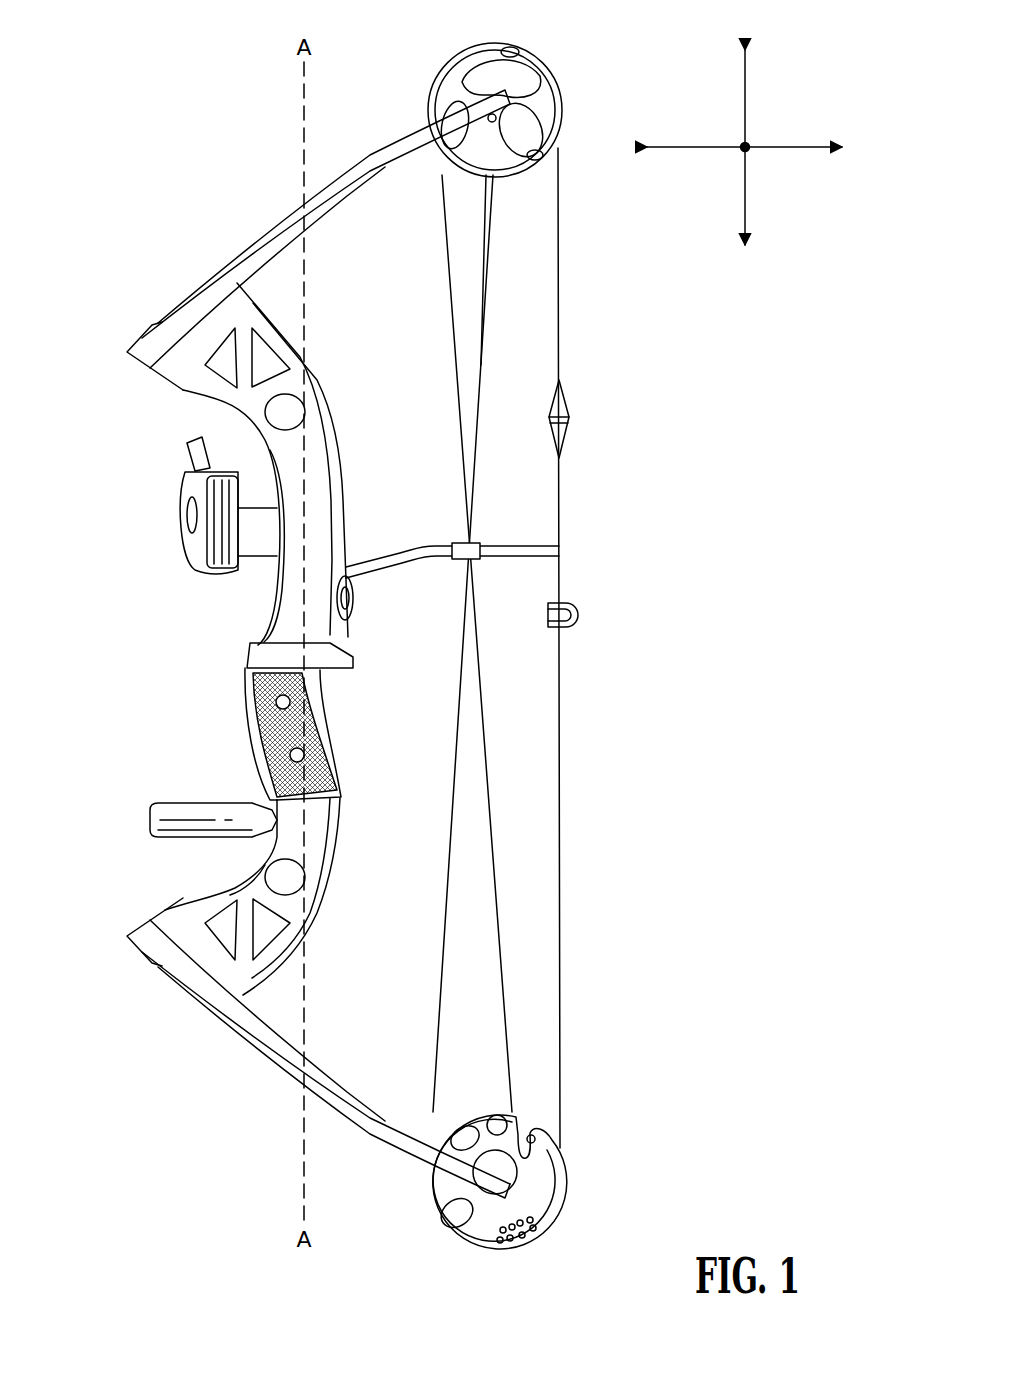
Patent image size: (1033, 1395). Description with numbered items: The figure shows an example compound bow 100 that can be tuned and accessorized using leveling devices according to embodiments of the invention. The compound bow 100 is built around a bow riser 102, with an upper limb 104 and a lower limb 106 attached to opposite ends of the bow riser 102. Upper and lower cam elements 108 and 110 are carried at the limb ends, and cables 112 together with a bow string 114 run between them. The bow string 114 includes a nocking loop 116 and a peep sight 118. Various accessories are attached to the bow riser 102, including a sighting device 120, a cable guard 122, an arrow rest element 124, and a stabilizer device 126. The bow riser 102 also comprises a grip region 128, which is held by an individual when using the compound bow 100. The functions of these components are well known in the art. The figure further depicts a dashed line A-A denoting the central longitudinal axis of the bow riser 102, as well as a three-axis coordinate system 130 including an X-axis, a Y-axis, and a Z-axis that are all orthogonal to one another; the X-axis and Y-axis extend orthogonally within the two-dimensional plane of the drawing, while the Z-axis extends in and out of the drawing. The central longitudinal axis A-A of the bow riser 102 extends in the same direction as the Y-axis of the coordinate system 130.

The compound bow 100 is at (226, 227).
The bow riser 102 is at (141, 985).
The upper limb 104 is at (364, 193).
The lower limb 106 is at (372, 1100).
The upper cam element 108 is at (547, 158).
The lower cam element 110 is at (563, 1185).
The cables 112 is at (441, 967).
The bow string 114 is at (566, 753).
The nocking loop 116 is at (565, 600).
The peep sight 118 is at (561, 413).
The sighting device 120 is at (182, 495).
The cable guard 122 is at (534, 540).
The arrow rest element 124 is at (354, 603).
The stabilizer device 126 is at (198, 813).
The grip region 128 is at (255, 732).
The three-axis coordinate system 130 is at (701, 114).